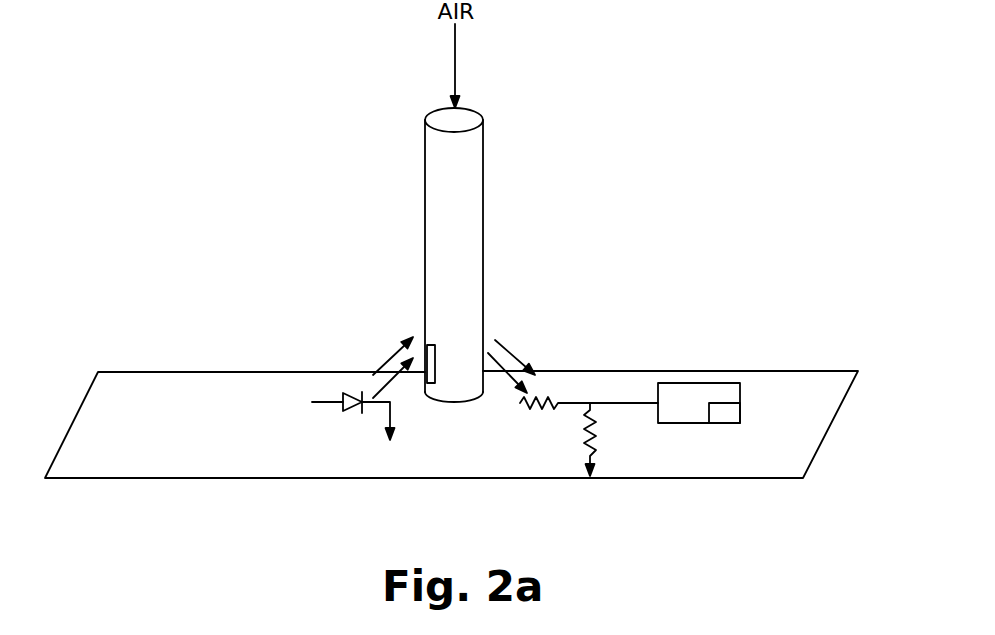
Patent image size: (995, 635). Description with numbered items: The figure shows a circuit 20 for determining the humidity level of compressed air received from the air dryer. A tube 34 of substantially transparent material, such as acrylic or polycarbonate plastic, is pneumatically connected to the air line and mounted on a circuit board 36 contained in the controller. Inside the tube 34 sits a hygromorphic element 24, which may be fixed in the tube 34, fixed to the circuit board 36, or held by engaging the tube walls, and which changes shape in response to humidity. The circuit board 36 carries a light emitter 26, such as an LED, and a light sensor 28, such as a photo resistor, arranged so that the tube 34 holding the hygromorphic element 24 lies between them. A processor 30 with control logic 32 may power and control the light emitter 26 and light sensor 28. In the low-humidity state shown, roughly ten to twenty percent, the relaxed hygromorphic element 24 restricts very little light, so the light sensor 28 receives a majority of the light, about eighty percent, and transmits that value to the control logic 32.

The circuit 20 is at (736, 205).
The hygromorphic element 24 is at (436, 356).
The light emitter 26 is at (352, 434).
The light sensor 28 is at (520, 432).
The processor 30 is at (695, 394).
The control logic 32 is at (722, 418).
The tube 34 is at (494, 180).
The circuit board 36 is at (775, 371).